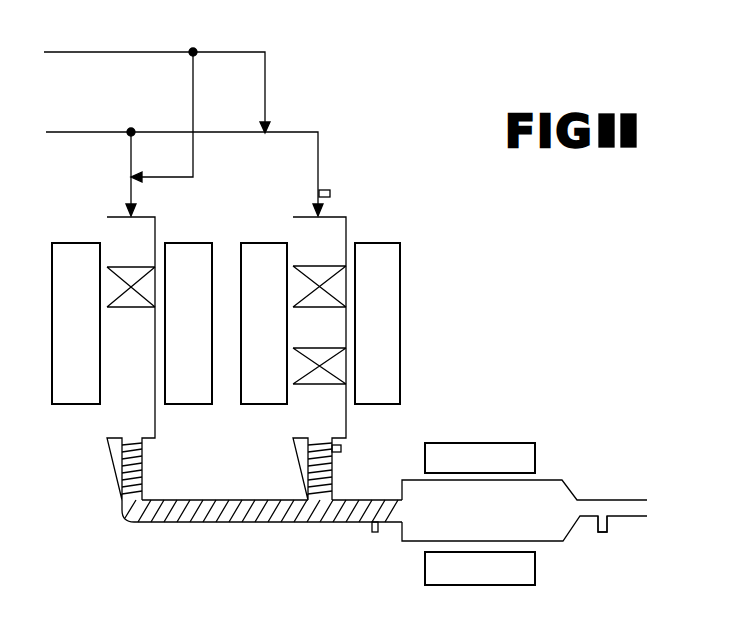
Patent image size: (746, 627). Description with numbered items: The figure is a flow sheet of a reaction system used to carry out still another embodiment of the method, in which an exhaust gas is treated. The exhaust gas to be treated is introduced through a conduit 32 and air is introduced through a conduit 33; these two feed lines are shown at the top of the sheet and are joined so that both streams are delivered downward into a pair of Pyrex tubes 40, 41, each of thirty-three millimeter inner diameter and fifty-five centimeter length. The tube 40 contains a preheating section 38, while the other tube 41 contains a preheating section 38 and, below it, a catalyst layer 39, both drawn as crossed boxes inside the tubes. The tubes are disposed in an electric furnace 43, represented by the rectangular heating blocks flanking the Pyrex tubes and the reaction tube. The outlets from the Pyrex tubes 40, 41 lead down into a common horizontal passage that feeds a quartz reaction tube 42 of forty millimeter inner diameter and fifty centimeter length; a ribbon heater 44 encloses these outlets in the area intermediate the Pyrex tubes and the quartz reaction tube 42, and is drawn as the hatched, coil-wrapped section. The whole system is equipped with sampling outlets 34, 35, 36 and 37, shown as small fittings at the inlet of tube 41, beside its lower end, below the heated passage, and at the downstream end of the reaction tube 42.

The conduit 33 is at (60, 36).
The conduit 32 is at (60, 116).
The sampling outlet 34 is at (326, 190).
The Pyrex tube 40 is at (156, 222).
The Pyrex tube 41 is at (347, 222).
The preheating section 38 is at (108, 285).
The catalyst layer 39 is at (347, 372).
The electric furnace 43 is at (64, 240).
The sampling outlet 35 is at (341, 452).
The ribbon heater 44 is at (195, 523).
The quartz reaction tube 42 is at (548, 480).
The sampling outlet 36 is at (370, 532).
The sampling outlet 37 is at (606, 530).